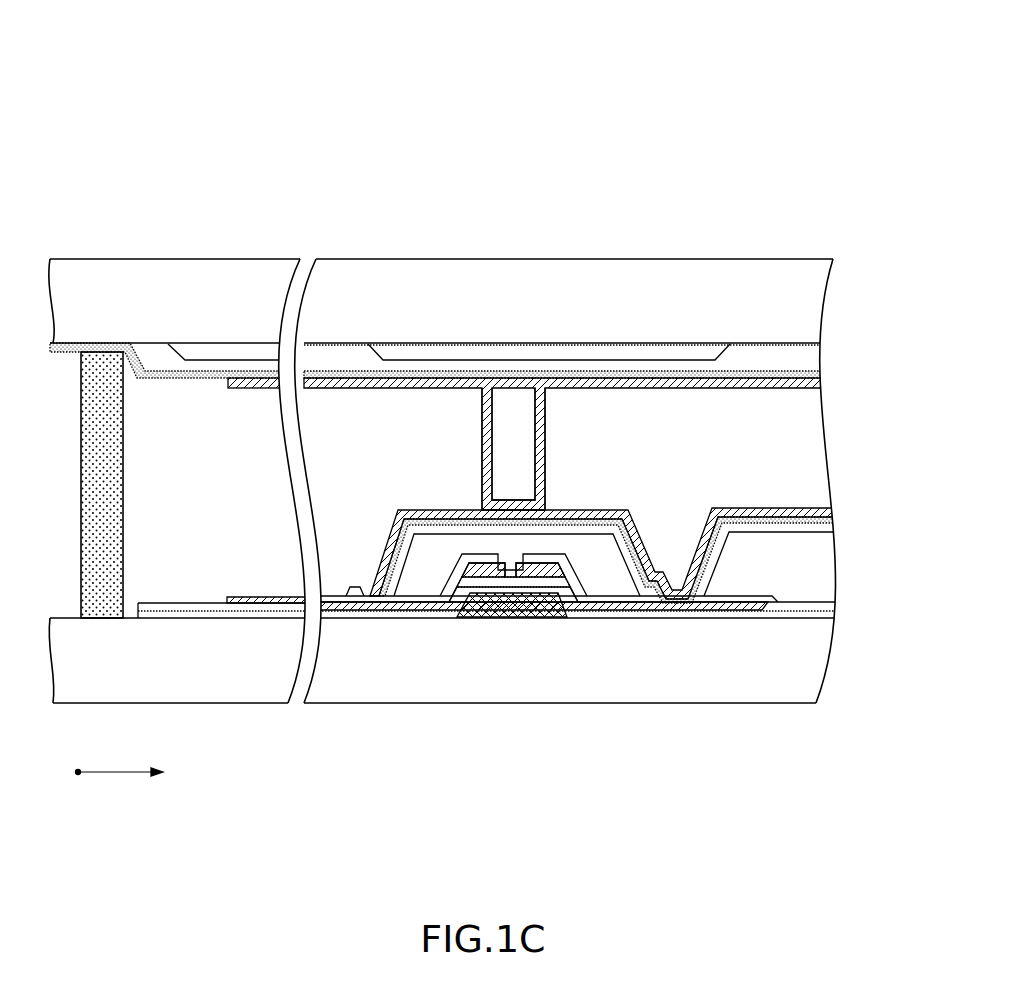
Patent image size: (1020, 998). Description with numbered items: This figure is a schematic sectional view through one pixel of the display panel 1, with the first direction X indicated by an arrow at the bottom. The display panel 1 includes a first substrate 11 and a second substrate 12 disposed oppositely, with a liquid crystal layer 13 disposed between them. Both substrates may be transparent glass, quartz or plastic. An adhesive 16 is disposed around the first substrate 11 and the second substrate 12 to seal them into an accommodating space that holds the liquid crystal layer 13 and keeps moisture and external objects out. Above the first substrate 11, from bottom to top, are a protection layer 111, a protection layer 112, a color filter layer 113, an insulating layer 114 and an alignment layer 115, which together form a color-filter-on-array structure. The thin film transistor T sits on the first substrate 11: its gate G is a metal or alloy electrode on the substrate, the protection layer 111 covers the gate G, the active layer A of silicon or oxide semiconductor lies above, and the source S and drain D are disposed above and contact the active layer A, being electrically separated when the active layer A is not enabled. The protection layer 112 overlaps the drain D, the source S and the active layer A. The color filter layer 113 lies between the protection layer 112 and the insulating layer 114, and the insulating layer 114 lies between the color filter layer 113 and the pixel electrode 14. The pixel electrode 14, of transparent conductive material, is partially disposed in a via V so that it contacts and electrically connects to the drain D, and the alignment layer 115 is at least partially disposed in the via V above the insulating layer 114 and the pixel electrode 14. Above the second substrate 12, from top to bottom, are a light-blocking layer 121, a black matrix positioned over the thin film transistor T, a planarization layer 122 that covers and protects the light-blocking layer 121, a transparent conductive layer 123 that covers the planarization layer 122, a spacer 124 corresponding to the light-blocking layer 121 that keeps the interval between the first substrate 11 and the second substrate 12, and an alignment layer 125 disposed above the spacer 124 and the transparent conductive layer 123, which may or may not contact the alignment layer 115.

The display panel 1 is at (232, 82).
The first substrate 11 is at (820, 678).
The protection layer 111 is at (826, 616).
The protection layer 112 is at (826, 604).
The color filter layer 113 is at (826, 562).
The insulating layer 114 is at (826, 533).
The alignment layer 115 is at (826, 510).
The second substrate 12 is at (812, 302).
The light-blocking layer 121 is at (430, 350).
The planarization layer 122 is at (812, 360).
The transparent conductive layer 123 is at (812, 374).
The spacer 124 is at (515, 412).
The alignment layer 125 is at (812, 384).
The liquid crystal layer 13 is at (783, 458).
The pixel electrode 14 is at (826, 523).
The adhesive 16 is at (94, 478).
The thin film transistor T is at (510, 616).
The via V is at (670, 542).
The source S is at (448, 580).
The gate G is at (507, 605).
The active layer A is at (541, 581).
The drain D is at (609, 604).
The first direction X is at (131, 772).